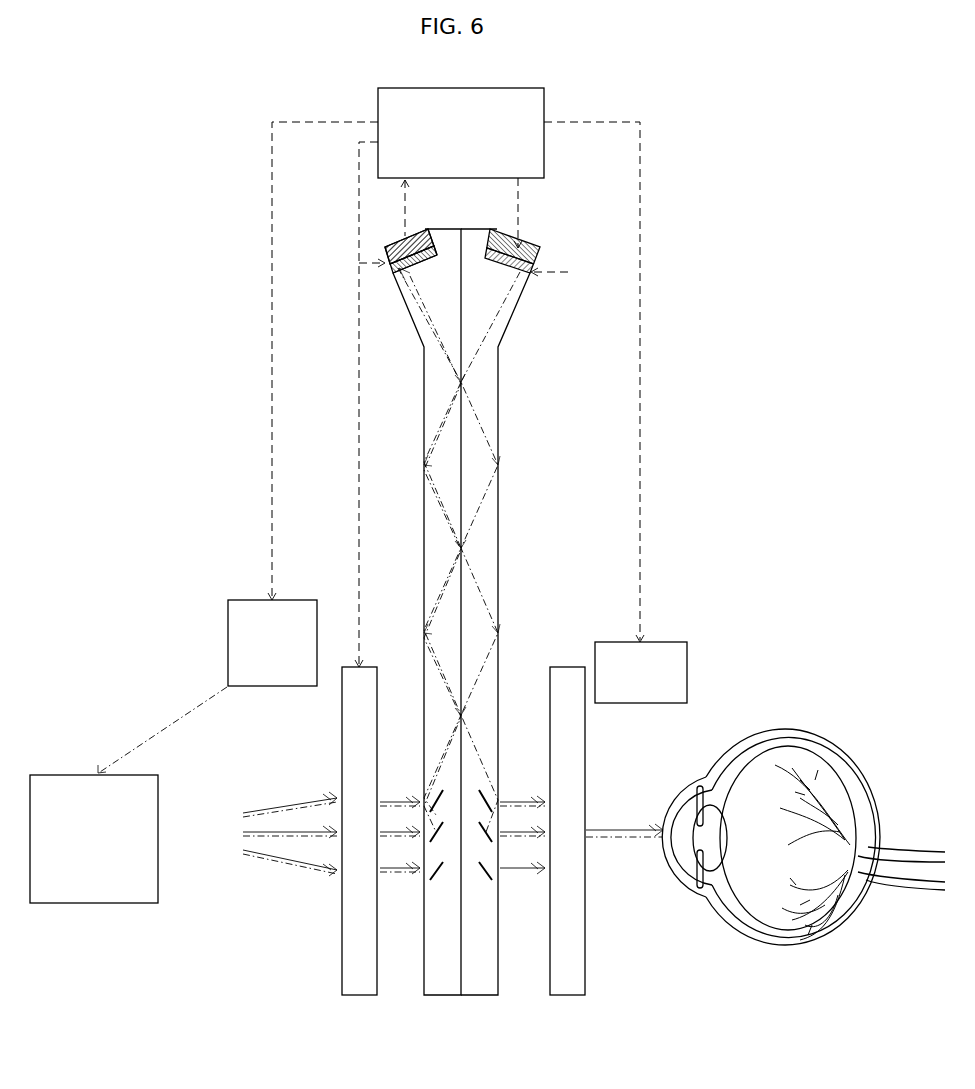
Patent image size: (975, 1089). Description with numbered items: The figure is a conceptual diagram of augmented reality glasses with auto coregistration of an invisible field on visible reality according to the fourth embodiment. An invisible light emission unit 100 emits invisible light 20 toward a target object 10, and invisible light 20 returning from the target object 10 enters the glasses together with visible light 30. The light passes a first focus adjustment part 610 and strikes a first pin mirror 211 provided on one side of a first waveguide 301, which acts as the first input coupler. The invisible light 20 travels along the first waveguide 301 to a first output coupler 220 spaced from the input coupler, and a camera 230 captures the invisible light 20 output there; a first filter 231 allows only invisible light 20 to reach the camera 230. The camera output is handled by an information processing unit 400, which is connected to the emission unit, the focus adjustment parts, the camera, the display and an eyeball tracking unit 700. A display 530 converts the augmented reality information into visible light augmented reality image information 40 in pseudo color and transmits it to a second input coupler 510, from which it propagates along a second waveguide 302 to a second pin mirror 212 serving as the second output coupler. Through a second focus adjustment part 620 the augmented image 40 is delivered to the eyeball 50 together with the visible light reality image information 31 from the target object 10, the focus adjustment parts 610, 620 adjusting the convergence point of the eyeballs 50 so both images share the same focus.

The target object 10 is at (64, 768).
The invisible light 20 is at (153, 735).
The visible light 30 is at (288, 807).
The visible light reality image information 31 is at (637, 830).
The visible light augmented reality image information 40 is at (627, 840).
The eyeballs 50 is at (830, 735).
The invisible light emission unit 100 is at (234, 594).
The first pin mirror 211 is at (443, 870).
The second pin mirror 212 is at (480, 870).
The first output coupler 220 is at (389, 265).
The camera 230 is at (385, 249).
The first filter 231 is at (393, 275).
The first waveguide 301 is at (440, 995).
The second waveguide 302 is at (478, 995).
The information processing unit 400 is at (375, 95).
The second input coupler 510 is at (530, 275).
The display 530 is at (540, 247).
The first focus adjustment part 610 is at (360, 995).
The second focus adjustment part 620 is at (566, 995).
The eyeball tracking unit 700 is at (680, 636).